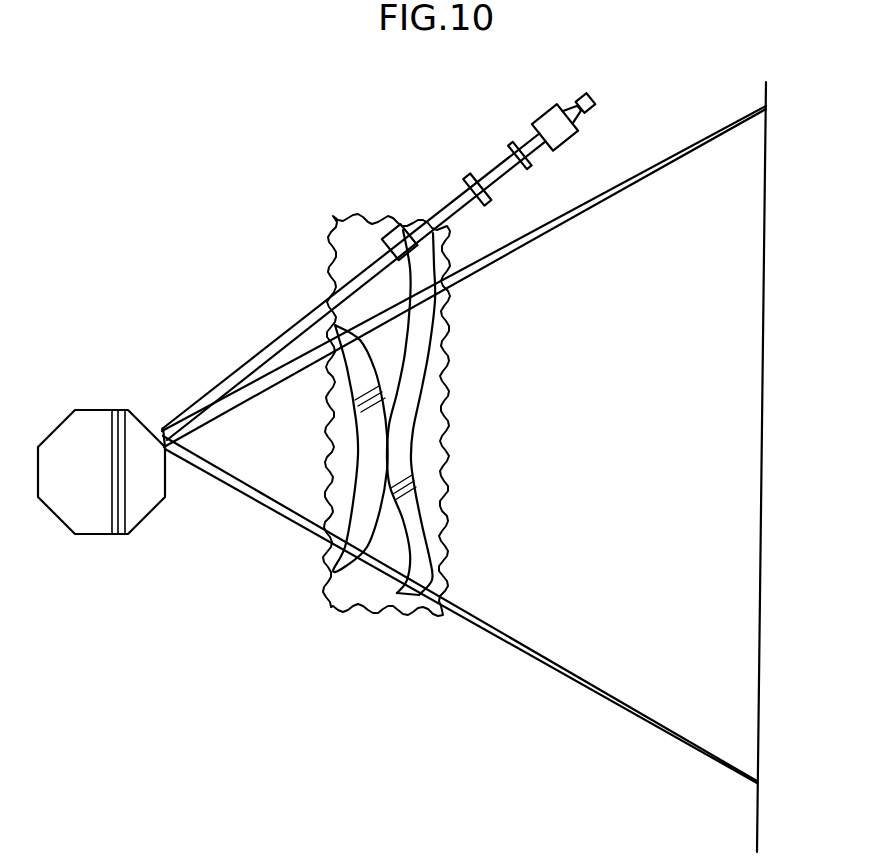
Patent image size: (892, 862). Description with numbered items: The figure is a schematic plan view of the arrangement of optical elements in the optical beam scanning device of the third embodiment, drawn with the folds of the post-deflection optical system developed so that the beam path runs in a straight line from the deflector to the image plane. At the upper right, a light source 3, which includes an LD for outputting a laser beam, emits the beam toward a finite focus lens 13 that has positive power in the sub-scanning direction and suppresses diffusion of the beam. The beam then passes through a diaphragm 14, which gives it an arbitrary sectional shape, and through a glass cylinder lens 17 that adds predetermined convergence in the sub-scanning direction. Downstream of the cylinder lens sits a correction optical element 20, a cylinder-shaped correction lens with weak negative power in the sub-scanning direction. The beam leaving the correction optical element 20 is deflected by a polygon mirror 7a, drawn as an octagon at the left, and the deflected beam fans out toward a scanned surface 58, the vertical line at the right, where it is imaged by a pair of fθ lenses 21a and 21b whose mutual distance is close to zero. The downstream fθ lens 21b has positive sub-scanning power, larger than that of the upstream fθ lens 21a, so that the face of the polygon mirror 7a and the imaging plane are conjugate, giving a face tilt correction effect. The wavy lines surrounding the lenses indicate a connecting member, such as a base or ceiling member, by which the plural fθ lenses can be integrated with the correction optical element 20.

The light source 3 is at (595, 103).
The finite focus lens 13 is at (549, 119).
The diaphragm 14 is at (510, 146).
The cylinder lens 17 is at (466, 180).
The correction optical element 20 is at (383, 224).
The fθ lens 21a is at (357, 441).
The fθ lens 21b is at (413, 453).
The polygon mirror 7a is at (100, 534).
The scanned surface 58 is at (764, 444).